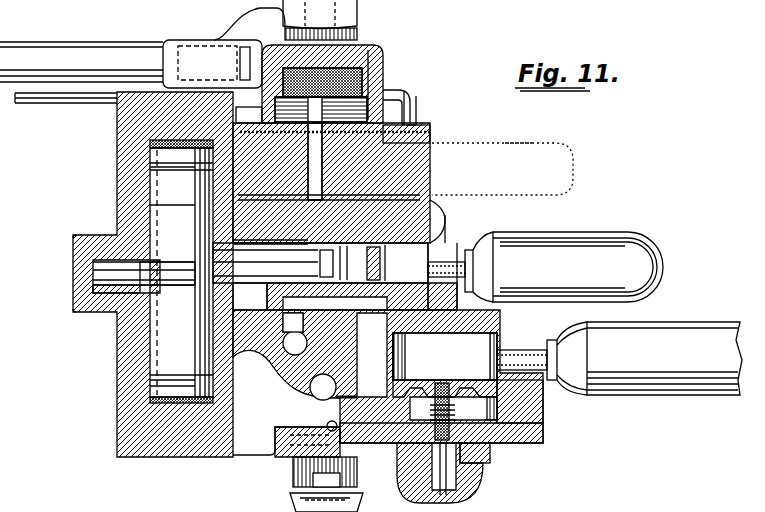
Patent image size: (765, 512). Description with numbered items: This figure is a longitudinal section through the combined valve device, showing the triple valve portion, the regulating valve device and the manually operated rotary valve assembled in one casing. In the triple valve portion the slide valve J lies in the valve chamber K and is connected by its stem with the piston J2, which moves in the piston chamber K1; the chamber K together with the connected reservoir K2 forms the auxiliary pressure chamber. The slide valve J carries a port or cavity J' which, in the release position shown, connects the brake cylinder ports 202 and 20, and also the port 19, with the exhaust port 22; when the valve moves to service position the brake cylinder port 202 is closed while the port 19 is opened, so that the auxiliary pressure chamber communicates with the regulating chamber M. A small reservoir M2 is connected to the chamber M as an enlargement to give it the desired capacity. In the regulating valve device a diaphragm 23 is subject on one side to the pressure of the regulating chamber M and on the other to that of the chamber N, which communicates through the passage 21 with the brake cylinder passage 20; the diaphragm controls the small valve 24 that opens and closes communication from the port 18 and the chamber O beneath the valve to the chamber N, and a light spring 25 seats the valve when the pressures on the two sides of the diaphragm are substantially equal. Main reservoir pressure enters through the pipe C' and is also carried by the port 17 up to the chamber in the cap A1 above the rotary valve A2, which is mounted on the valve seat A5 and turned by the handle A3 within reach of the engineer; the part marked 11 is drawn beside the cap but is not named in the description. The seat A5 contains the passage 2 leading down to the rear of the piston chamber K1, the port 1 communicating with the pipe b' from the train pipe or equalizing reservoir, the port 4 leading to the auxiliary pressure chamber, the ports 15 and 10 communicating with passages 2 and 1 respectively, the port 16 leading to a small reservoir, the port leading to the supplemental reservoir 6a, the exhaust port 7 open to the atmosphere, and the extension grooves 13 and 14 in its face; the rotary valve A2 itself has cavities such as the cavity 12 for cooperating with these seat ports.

The handle A3 is at (163, 58).
The pipe b' is at (233, 110).
The cavity 12 is at (272, 56).
The cap 11 is at (350, 62).
The cap A1 is at (378, 60).
The rotary valve A2 is at (383, 75).
The port 17 is at (362, 80).
The extension groove 14 is at (365, 100).
The extension groove 13 is at (335, 120).
The exhaust port 7 is at (415, 98).
The port 1 is at (400, 133).
The port 16 is at (275, 125).
The valve seat A5 is at (433, 150).
The supplemental reservoir 6a is at (520, 143).
The port 4 is at (437, 221).
The port 18 is at (447, 214).
The piston chamber K1 is at (153, 274).
The reservoir K2 is at (555, 224).
The port 2 is at (229, 208).
The port 15 is at (172, 172).
The port 10 is at (172, 197).
The piston J2 is at (208, 296).
The slide valve J is at (320, 263).
The valve chamber K is at (374, 263).
The port J' is at (330, 296).
The port 19 is at (457, 296).
The brake cylinder port 202 is at (388, 382).
The exhaust port 22 is at (330, 352).
The brake cylinder port 20 is at (333, 387).
The passage 21 is at (302, 414).
The pipe C' is at (312, 472).
The regulating chamber M is at (425, 348).
The diaphragm 23 is at (445, 384).
The chamber N is at (492, 410).
The small valve 24 is at (545, 432).
The chamber O is at (495, 457).
The spring 25 is at (488, 466).
The small reservoir M2 is at (627, 365).